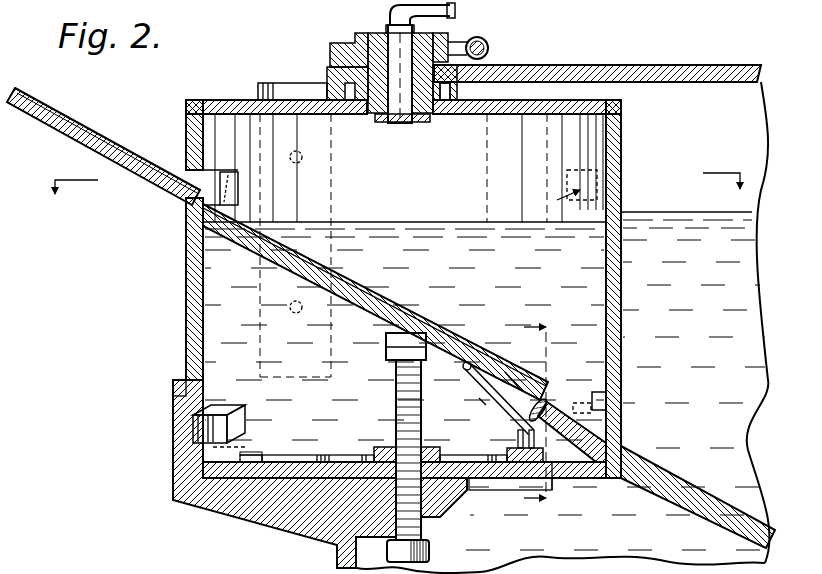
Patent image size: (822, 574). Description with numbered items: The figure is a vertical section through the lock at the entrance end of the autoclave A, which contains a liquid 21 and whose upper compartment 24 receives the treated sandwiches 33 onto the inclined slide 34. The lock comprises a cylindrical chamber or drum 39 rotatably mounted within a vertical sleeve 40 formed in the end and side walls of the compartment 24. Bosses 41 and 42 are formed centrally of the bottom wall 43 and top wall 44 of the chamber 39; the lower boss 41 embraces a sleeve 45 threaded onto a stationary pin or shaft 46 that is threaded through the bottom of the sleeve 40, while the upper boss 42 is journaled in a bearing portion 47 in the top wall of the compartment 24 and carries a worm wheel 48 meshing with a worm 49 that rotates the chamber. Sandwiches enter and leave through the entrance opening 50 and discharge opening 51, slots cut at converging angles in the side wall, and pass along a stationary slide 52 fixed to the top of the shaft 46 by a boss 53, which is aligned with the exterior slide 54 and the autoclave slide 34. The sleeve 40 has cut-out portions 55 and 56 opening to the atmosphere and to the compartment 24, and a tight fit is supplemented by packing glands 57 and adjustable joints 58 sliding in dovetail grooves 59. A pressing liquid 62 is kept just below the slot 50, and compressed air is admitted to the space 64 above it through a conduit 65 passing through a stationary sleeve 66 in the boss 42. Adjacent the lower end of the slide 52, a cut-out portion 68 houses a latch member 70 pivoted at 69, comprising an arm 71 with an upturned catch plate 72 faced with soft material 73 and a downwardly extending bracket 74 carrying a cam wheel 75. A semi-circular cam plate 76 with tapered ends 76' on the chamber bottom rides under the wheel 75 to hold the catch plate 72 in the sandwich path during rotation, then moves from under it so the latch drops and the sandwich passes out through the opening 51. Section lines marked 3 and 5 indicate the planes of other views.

The liquid 21 is at (748, 268).
The upper compartment 24 is at (730, 66).
The autoclave A is at (752, 100).
The sandwich 33 is at (404, 312).
The slide 34 is at (692, 488).
The cylindrical chamber or drum 39 is at (620, 140).
The vertical sleeve 40 is at (190, 486).
The boss 41 is at (440, 454).
The boss 42 is at (380, 34).
The bottom wall 43 is at (248, 461).
The top wall 44 is at (444, 114).
The sleeve 45 is at (388, 446).
The stationary pin or shaft 46 is at (421, 400).
The bearing portion 47 is at (450, 90).
The worm wheel 48 is at (458, 46).
The worm 49 is at (489, 48).
The entrance opening 50 is at (200, 176).
The discharge opening 51 is at (215, 428).
The stationary slide 52 is at (336, 314).
The boss 53 is at (386, 352).
The slide 54 is at (166, 203).
The cut-out portion 55 is at (205, 362).
The cut-out portion 56 is at (608, 258).
The packing gland 57 is at (184, 394).
The adjustable joint 58 is at (290, 84).
The dovetail groove 59 is at (352, 174).
The pressing liquid 62 is at (205, 290).
The space 64 is at (585, 130).
The conduit 65 is at (452, 10).
The stationary sleeve 66 is at (424, 122).
The cut-out portion 68 is at (515, 378).
The pivot 69 is at (462, 376).
The latch member 70 is at (478, 399).
The arm 71 is at (500, 413).
The catch plate 72 is at (555, 398).
The soft facing material 73 is at (541, 395).
The bracket 74 is at (545, 444).
The cam wheel 75 is at (552, 478).
The cam plate 76 is at (384, 447).
The tapered end 76' is at (278, 446).
The section line 3- 3 is at (393, 174).
The section line 5- 5 is at (535, 416).